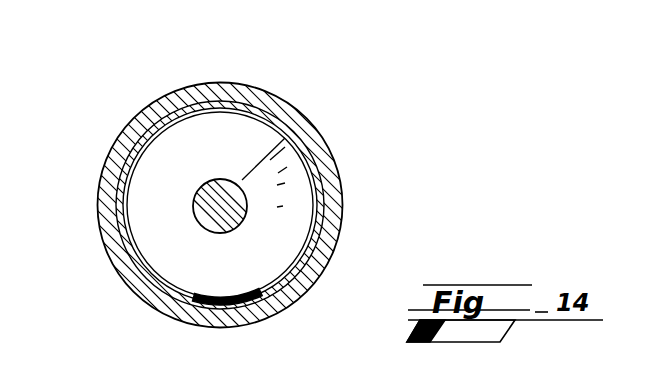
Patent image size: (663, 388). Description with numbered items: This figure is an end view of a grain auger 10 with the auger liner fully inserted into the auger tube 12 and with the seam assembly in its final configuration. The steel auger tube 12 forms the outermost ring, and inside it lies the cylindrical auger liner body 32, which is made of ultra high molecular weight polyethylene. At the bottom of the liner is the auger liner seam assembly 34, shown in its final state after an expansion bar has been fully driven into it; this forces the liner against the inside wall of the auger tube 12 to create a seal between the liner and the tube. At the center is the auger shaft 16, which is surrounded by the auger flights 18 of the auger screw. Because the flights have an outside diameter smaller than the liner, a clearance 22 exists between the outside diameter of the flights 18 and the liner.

The grain auger 10 is at (281, 98).
The auger tube 12 is at (314, 130).
The auger liner body 32 is at (320, 187).
The clearance 22 is at (313, 215).
The auger liner seam assembly 34 is at (238, 305).
The auger shaft 16 is at (196, 196).
The auger flights 18 is at (147, 233).